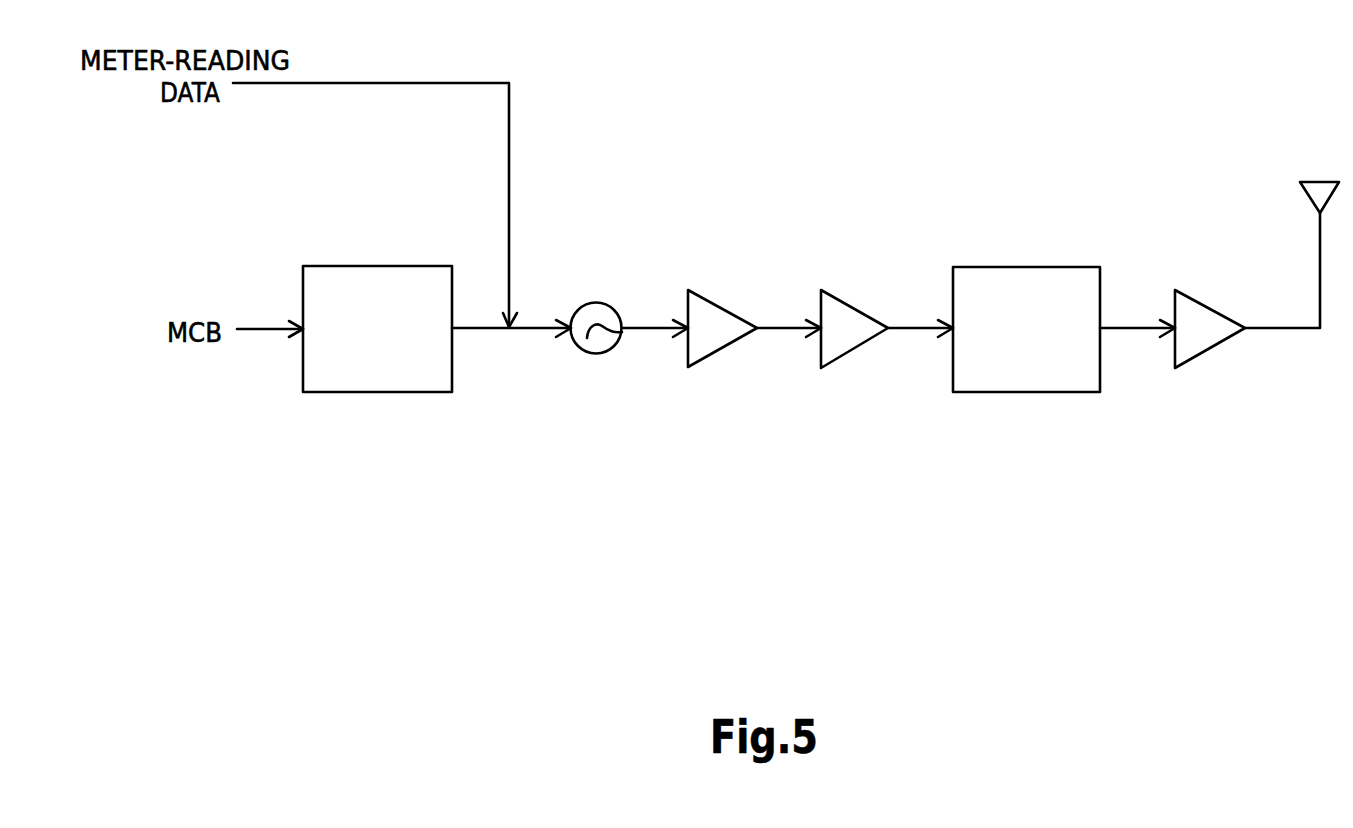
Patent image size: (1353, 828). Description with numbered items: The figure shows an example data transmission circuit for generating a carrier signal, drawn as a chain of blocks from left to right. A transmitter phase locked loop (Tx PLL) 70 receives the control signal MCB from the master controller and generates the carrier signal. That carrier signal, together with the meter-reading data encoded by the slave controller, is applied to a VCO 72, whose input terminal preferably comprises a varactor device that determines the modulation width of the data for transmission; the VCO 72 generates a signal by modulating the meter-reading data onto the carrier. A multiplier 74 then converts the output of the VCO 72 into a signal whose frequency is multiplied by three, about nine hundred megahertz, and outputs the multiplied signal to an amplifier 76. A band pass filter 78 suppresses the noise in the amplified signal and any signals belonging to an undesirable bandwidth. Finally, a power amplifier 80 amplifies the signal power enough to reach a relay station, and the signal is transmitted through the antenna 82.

The transmitter phase locked loop 70 is at (374, 265).
The VCO 72 is at (597, 302).
The multiplier 74 is at (718, 305).
The amplifier 76 is at (851, 306).
The band pass filter 78 is at (1035, 267).
The power amplifier 80 is at (1208, 306).
The antenna 82 is at (1318, 182).